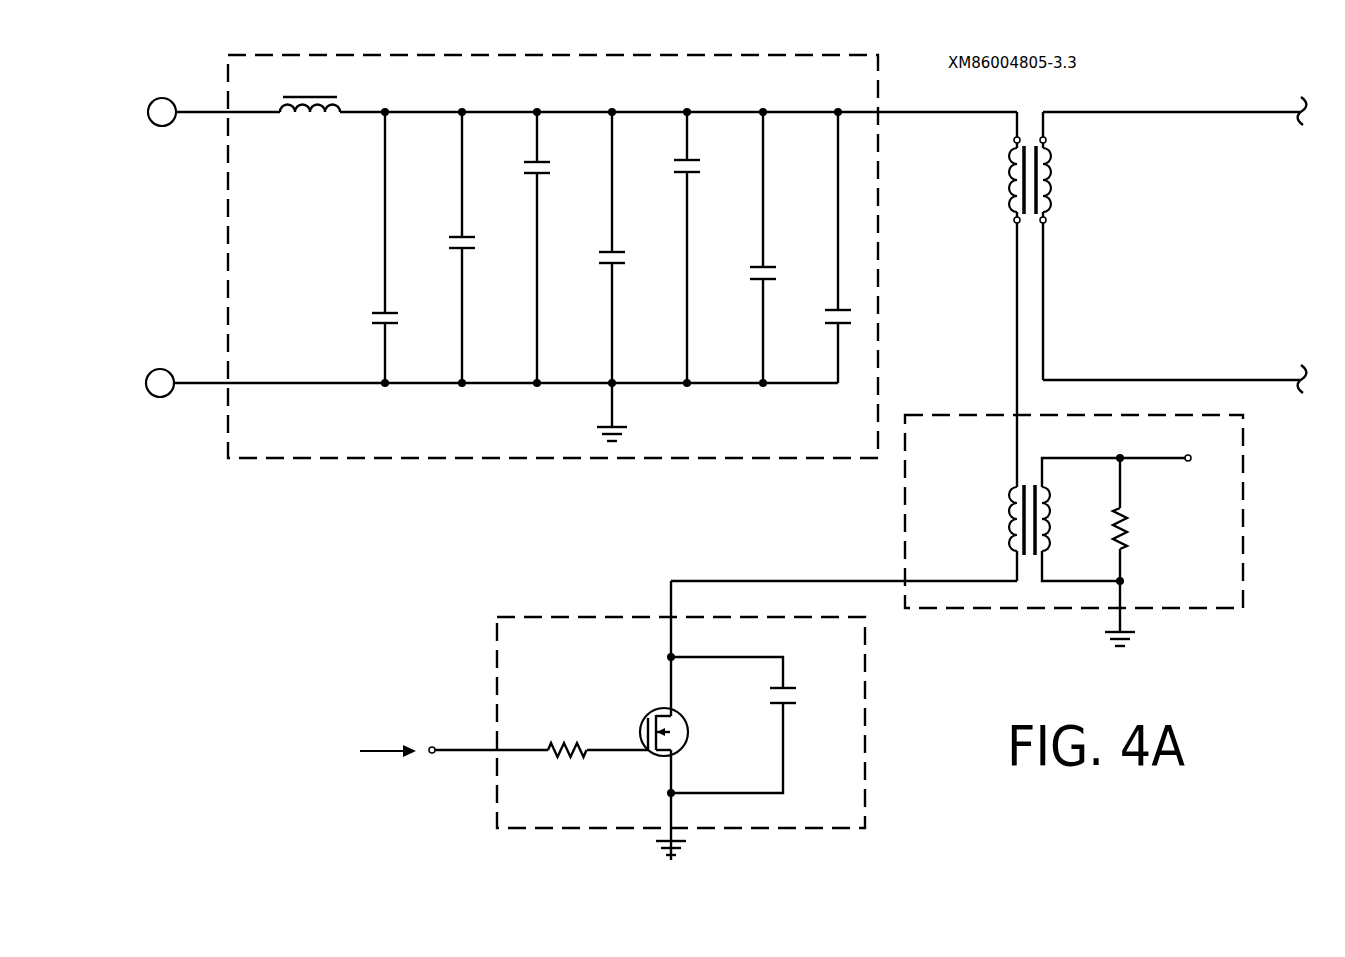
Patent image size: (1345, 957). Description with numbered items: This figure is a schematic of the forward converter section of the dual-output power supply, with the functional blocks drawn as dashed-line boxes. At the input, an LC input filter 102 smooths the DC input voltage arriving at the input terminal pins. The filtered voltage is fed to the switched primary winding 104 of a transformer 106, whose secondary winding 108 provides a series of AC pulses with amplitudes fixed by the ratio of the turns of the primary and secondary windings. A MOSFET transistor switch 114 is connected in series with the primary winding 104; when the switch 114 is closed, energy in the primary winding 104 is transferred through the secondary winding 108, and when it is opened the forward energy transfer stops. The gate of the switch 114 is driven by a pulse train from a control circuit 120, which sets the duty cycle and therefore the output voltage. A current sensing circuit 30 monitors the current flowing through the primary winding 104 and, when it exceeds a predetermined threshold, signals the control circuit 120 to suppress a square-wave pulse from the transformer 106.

The LC input filter 102 is at (242, 213).
The primary winding 104 is at (1010, 190).
The transformer 106 is at (1043, 98).
The secondary winding 108 is at (1047, 172).
The current sensing circuit 30 is at (1222, 468).
The MOSFET transistor switch 114 is at (562, 630).
The control circuit 120 is at (336, 767).